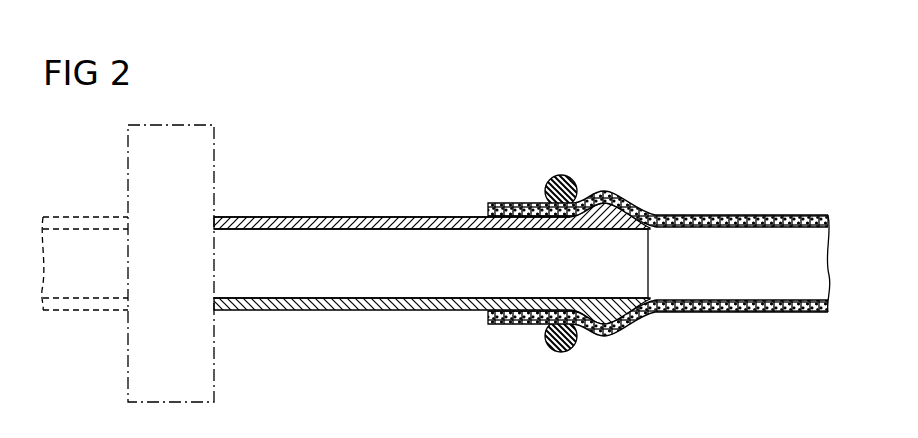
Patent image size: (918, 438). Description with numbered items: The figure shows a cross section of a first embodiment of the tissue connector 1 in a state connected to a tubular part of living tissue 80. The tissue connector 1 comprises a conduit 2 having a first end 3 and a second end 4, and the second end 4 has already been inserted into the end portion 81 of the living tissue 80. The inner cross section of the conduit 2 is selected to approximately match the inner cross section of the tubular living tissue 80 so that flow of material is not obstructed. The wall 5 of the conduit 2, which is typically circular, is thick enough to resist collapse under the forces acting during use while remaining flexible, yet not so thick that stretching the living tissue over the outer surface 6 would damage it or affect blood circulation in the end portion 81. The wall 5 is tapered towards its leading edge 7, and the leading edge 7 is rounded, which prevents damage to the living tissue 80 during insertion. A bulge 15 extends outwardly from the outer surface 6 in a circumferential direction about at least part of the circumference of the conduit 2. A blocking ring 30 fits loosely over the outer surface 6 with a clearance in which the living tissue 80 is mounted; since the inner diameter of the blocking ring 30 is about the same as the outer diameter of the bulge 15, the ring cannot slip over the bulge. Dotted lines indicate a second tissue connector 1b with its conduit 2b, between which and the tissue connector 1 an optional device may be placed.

The tissue connector 1 is at (370, 160).
The second tissue connector 1b is at (93, 204).
The conduit 2b is at (88, 287).
The conduit 2 is at (358, 245).
The first end 3 is at (252, 245).
The second end 4 is at (636, 259).
The wall 5 is at (378, 306).
The outer surface 6 is at (438, 216).
The leading edge 7 is at (648, 278).
The bulge 15 is at (600, 203).
The blocking ring 30 is at (558, 176).
The living tissue 80 is at (765, 214).
The end portion 81 is at (513, 208).